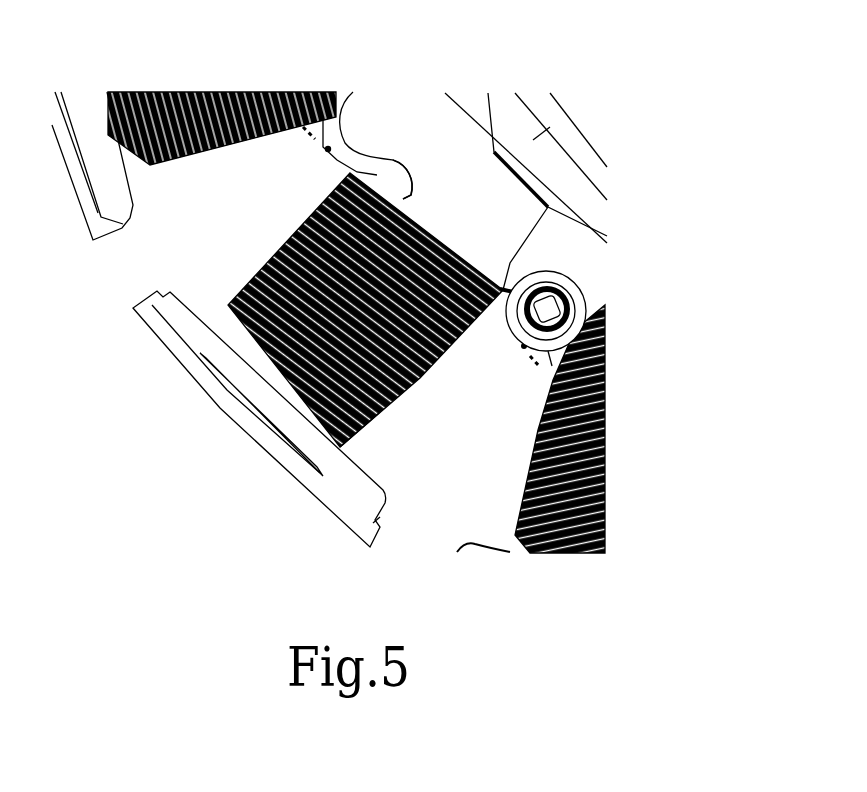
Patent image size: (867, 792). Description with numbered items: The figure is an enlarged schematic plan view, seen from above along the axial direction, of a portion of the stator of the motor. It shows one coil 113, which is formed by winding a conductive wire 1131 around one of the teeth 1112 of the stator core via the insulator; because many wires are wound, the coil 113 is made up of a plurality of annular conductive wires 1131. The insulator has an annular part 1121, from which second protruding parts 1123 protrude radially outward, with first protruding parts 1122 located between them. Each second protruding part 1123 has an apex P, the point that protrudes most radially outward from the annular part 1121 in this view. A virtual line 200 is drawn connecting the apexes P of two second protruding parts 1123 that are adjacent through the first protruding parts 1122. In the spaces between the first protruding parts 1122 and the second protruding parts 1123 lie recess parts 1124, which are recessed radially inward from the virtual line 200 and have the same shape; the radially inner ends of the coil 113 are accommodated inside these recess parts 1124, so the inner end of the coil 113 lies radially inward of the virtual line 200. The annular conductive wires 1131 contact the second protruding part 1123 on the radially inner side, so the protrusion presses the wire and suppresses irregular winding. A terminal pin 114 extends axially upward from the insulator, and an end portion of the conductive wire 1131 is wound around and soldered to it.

The coil 113 is at (243, 267).
The terminal pin 114 is at (550, 309).
The virtual line 200 is at (506, 330).
The teeth 1112 is at (193, 368).
The annular part 1121 is at (547, 173).
The first protruding parts 1122 is at (292, 410).
The second protruding part 1123 is at (358, 137).
The recess part 1124 is at (498, 288).
The conductive wire 1131 is at (387, 440).
The apex P is at (325, 150).